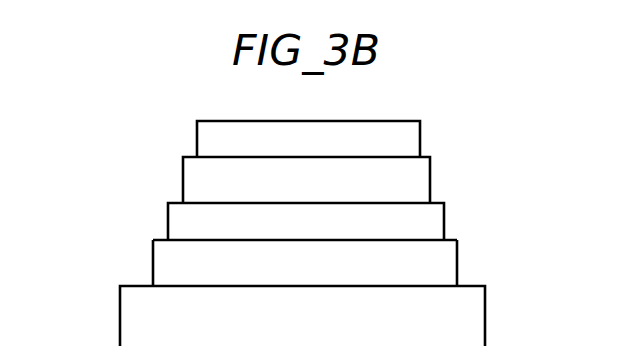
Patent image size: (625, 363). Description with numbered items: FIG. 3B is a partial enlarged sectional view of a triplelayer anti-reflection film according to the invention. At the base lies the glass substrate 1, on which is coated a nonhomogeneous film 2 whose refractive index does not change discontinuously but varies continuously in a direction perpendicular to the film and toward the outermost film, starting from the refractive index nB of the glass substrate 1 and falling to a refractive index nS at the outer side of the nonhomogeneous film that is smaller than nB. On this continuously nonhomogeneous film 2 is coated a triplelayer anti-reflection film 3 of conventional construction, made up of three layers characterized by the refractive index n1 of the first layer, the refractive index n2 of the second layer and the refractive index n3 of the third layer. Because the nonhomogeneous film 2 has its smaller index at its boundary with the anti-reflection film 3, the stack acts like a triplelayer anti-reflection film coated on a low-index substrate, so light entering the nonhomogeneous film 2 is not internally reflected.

The glass substrate 1 is at (475, 322).
The nonhomogeneous film 2 is at (454, 267).
The triplelayer anti-reflection film 3 is at (302, 149).
The refractive index of the first layer n1 is at (203, 128).
The refractive index of the second layer n2 is at (194, 175).
The refractive index of the third layer n3 is at (257, 187).
The refractive index at outer side of nonhomogeneous film nS is at (158, 237).
The refractive index of the glass substrate nB is at (306, 261).